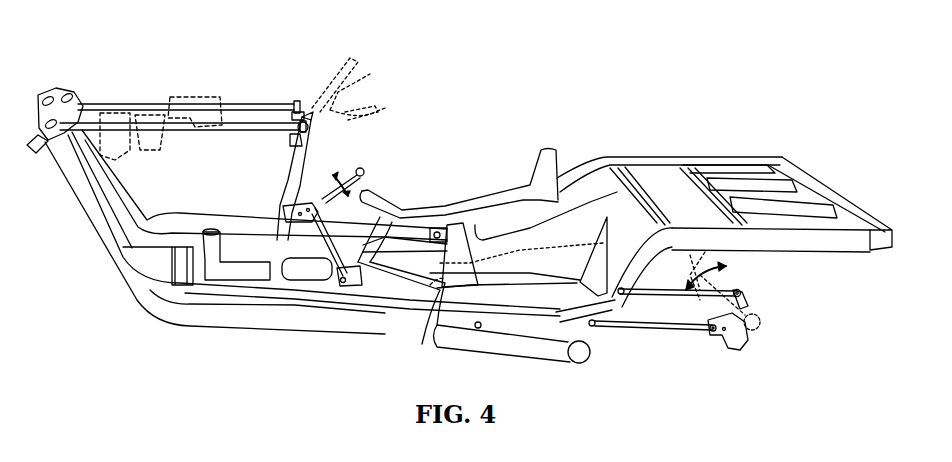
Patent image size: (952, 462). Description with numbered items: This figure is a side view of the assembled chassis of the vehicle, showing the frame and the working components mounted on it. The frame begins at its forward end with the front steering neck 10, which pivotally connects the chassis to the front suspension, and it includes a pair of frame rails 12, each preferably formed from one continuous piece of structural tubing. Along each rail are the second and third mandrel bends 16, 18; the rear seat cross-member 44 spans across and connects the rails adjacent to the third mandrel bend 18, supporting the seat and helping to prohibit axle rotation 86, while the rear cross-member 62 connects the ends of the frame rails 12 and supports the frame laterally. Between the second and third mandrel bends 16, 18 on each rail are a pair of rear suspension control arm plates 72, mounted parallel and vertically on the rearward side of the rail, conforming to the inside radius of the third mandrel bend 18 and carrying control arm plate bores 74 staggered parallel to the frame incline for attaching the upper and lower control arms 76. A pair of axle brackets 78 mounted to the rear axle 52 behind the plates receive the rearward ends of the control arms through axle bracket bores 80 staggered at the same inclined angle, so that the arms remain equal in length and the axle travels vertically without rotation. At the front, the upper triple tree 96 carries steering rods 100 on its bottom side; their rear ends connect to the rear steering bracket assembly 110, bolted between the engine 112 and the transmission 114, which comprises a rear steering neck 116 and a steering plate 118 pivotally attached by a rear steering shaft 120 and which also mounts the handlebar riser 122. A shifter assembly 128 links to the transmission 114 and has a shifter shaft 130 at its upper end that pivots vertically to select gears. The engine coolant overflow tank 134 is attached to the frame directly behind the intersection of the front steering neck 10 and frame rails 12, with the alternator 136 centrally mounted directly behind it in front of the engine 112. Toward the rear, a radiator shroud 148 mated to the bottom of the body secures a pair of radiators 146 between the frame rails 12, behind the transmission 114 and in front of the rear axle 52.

The front steering neck 10 is at (32, 154).
The frame rails 12 is at (88, 196).
The second mandrel bend 16 is at (580, 328).
The third mandrel bend 18 is at (637, 178).
The rear seat cross-member 44 is at (650, 205).
The rear axle 52 is at (759, 328).
The rear cross-member 62 is at (833, 190).
The rear suspension control arm plates 72 is at (632, 277).
The control arm plate bores 74 is at (613, 308).
The upper and lower control arms 76 is at (693, 328).
The axle brackets 78 is at (736, 340).
The axle bracket bores 80 is at (742, 295).
The axle rotation 86 is at (712, 267).
The upper triple tree 96 is at (58, 92).
The steering rods 100 is at (260, 122).
The rear steering bracket assembly 110 is at (293, 90).
The engine 112 is at (197, 170).
The transmission 114 is at (331, 157).
The rear steering neck 116 is at (293, 137).
The steering plate 118 is at (310, 127).
The rear steering shaft 120 is at (293, 145).
The handlebar riser 122 is at (327, 90).
The shifter assembly 128 is at (285, 212).
The shifter shaft 130 is at (364, 170).
The engine coolant overflow tank 134 is at (90, 115).
The alternator 136 is at (123, 117).
The radiators 146 is at (525, 266).
The radiator shroud 148 is at (524, 190).